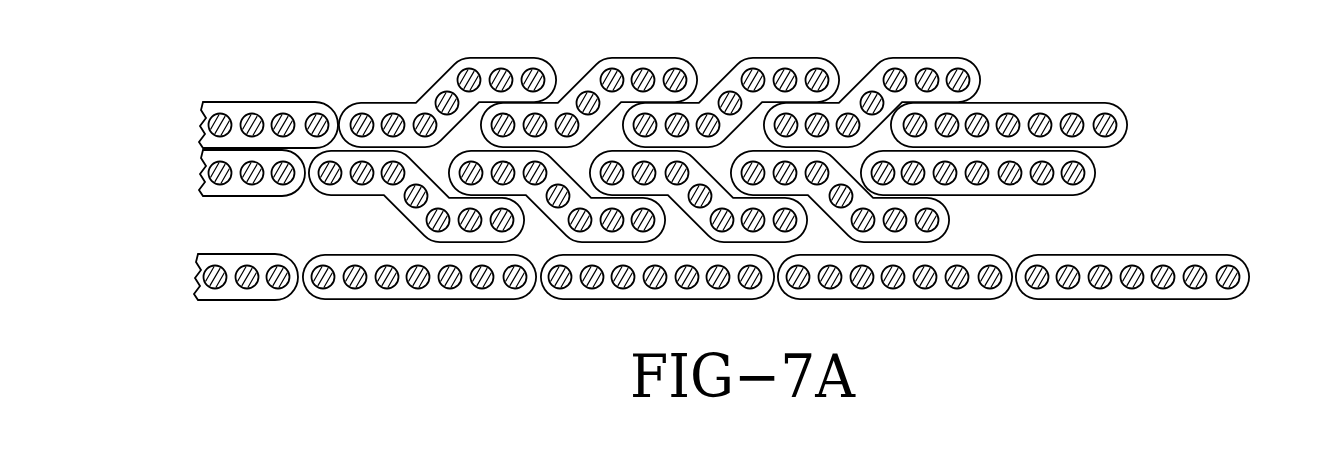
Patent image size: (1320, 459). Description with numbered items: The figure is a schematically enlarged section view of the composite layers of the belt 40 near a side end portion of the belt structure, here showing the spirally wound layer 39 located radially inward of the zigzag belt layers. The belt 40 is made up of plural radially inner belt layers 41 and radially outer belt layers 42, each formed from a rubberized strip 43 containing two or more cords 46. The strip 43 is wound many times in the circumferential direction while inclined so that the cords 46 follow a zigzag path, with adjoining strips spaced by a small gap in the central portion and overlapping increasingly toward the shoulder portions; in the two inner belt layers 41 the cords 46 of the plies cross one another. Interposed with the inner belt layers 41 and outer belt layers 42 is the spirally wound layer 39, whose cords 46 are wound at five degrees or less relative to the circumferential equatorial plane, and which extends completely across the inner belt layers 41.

The spirally wound layer 39 is at (661, 331).
The belt 40 is at (674, 128).
The radially inner belt layer 41 is at (234, 310).
The radially outer belt layer 42 is at (186, 154).
The rubberized strip 43 is at (419, 326).
The cord 46 is at (455, 282).